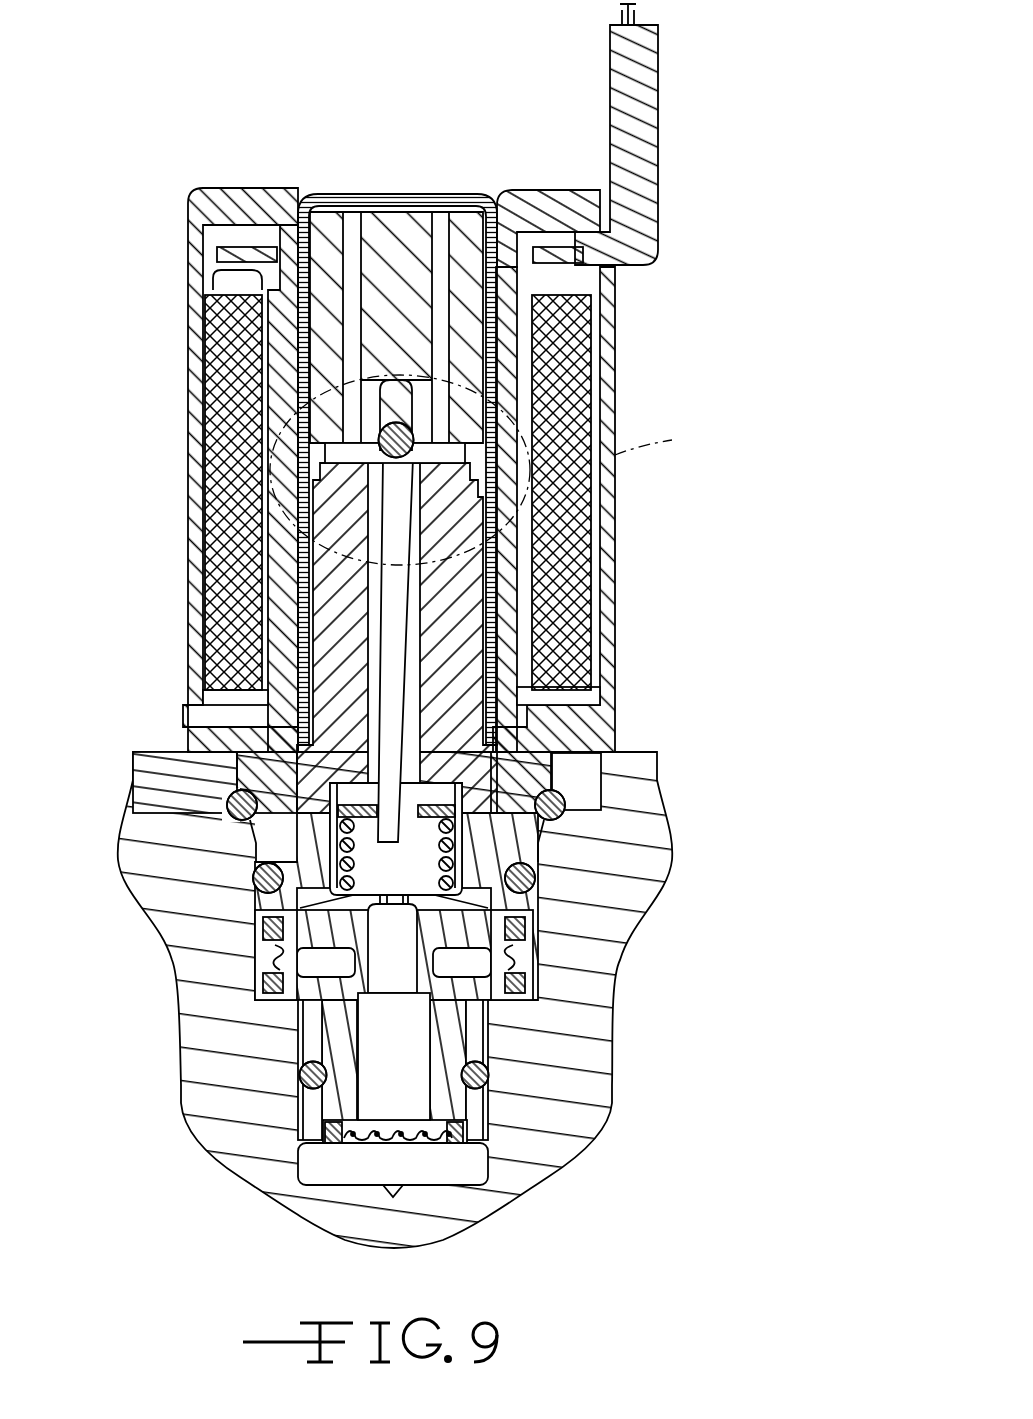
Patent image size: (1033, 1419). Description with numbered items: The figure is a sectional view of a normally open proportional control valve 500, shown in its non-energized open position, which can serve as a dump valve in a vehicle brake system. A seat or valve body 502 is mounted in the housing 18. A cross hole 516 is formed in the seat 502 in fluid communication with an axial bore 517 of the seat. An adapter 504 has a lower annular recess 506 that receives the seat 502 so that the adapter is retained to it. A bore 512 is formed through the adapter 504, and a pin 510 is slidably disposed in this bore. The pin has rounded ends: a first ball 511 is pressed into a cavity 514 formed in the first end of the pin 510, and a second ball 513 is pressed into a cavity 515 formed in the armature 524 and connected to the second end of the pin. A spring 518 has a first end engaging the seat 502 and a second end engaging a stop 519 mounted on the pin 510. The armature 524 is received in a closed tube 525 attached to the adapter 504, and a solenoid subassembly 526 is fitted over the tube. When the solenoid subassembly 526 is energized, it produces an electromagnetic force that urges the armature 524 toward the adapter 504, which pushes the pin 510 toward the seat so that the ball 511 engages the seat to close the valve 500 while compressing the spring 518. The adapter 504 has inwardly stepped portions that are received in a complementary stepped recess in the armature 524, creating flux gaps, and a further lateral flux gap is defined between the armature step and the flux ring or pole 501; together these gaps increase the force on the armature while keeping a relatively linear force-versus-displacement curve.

The control valve 500 is at (446, 600).
The closed tube 525 is at (336, 193).
The armature 524 is at (413, 222).
The solenoid subassembly 526 is at (186, 350).
The cavity 515 is at (405, 437).
The second ball 513 is at (388, 415).
The pole 501 is at (505, 580).
The bore 512 is at (330, 540).
The pin 510 is at (385, 720).
The stop 519 is at (480, 790).
The cavity 514 is at (240, 802).
The adapter 504 is at (500, 830).
The spring 518 is at (510, 852).
The first ball 511 is at (300, 895).
The lower annular recess 506 is at (465, 945).
The cross hole 516 is at (468, 965).
The valve body 502 is at (460, 1025).
The axial bore 517 is at (405, 1075).
The housing 18 is at (505, 1185).